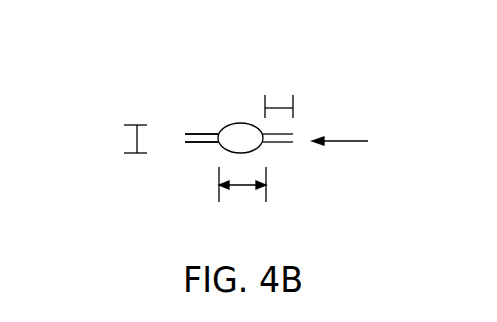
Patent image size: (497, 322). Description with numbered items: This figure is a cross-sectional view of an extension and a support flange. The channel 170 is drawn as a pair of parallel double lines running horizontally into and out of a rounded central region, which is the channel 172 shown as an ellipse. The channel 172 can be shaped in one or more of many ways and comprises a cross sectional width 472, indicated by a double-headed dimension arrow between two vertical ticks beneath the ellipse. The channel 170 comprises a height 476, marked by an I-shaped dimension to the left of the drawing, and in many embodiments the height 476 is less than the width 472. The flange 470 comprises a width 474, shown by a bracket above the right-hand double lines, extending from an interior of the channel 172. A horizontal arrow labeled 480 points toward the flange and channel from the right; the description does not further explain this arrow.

The channel 170 is at (233, 104).
The channel 172 is at (255, 133).
The flange 470 is at (195, 133).
The cross sectional width 472 is at (218, 185).
The width 474 is at (282, 105).
The height 476 is at (133, 138).
The light direction arrow 480 is at (358, 141).